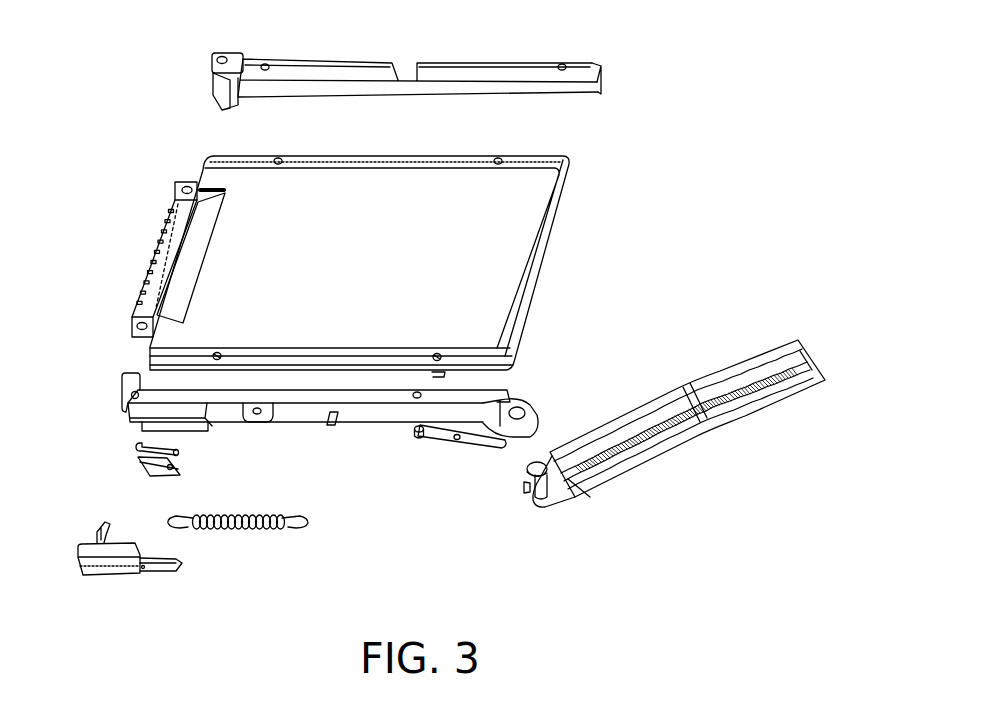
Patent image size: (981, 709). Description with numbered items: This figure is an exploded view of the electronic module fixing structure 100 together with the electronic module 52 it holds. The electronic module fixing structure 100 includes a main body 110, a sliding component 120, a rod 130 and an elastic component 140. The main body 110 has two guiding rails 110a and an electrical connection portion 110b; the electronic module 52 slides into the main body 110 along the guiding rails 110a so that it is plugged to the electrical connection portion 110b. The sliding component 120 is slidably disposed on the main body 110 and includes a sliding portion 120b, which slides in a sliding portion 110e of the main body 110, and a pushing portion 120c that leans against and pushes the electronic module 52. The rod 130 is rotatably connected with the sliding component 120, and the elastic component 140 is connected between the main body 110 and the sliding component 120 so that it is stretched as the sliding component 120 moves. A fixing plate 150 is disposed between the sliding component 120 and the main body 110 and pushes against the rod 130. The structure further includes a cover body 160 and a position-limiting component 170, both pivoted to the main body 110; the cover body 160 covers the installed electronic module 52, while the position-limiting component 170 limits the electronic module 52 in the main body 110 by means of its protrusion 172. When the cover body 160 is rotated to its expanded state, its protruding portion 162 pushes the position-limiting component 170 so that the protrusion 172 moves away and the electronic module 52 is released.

The electronic module fixing structure 100 is at (541, 49).
The electronic module 52 is at (452, 192).
The main body 110 is at (85, 135).
The guiding rails 110a is at (313, 70).
The electrical connection portion 110b is at (180, 220).
The sliding portion 110e is at (130, 407).
The sliding component 120 is at (69, 547).
The sliding portion 120b is at (105, 568).
The pushing portion 120c is at (107, 522).
The rod 130 is at (143, 443).
The elastic component 140 is at (243, 530).
The fixing plate 150 is at (148, 477).
The cover body 160 is at (653, 418).
The protruding portion 162 is at (530, 497).
The position-limiting component 170 is at (478, 446).
The protrusion 172 is at (424, 440).